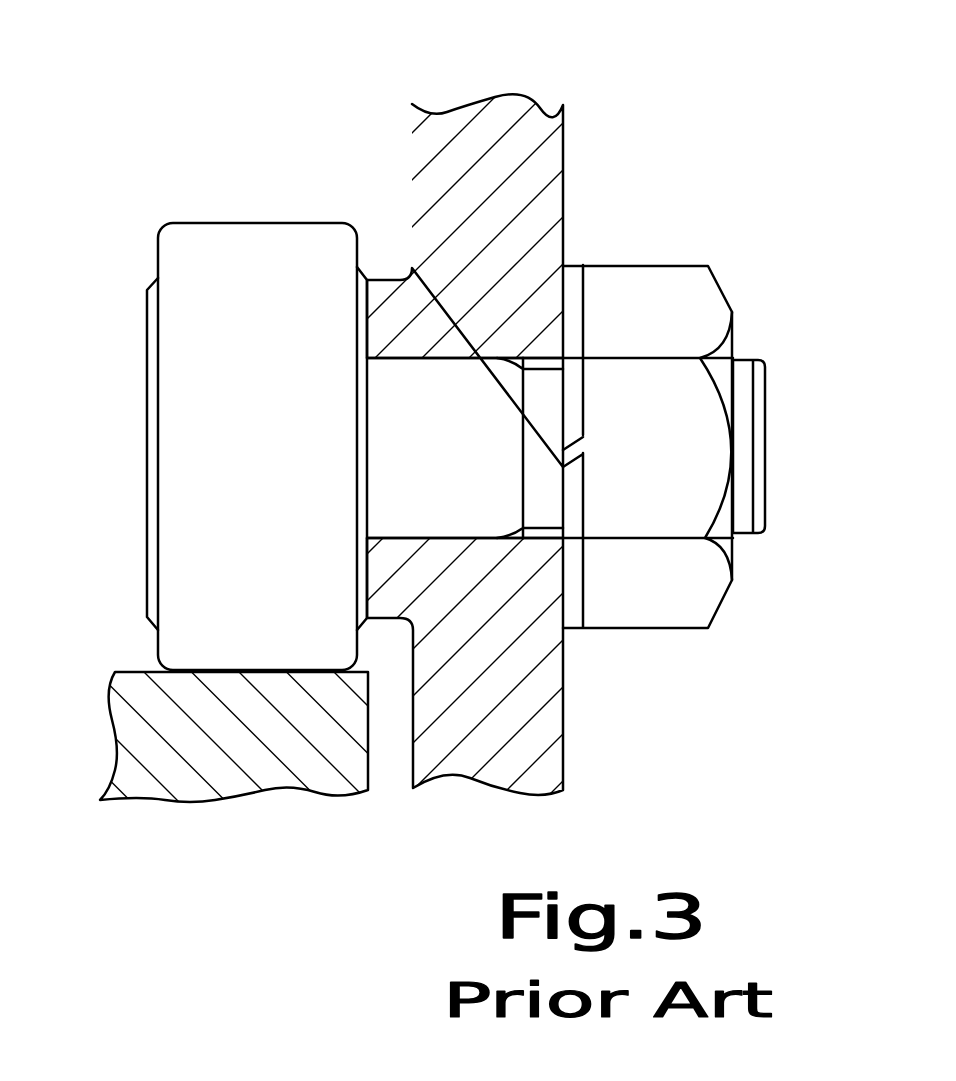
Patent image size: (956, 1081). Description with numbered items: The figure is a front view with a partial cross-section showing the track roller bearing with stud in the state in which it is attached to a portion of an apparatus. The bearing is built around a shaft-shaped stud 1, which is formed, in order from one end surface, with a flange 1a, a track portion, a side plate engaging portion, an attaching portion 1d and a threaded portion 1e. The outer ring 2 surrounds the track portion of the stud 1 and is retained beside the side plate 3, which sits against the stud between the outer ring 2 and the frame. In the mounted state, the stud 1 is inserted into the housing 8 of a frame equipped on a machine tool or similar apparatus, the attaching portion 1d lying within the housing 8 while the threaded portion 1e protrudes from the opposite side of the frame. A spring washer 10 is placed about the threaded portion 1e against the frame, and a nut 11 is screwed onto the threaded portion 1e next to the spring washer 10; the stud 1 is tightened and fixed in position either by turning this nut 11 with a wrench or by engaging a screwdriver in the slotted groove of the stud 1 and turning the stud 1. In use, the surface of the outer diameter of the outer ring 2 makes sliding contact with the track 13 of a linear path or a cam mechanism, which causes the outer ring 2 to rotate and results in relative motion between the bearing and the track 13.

The stud 1 is at (766, 406).
The flange 1a is at (153, 367).
The attaching portion 1d is at (435, 503).
The threaded portion 1e is at (745, 362).
The outer ring 2 is at (232, 235).
The side plate 3 is at (362, 282).
The housing 8 is at (442, 358).
The spring washer 10 is at (575, 268).
The nut 11 is at (657, 280).
The track 13 is at (138, 675).